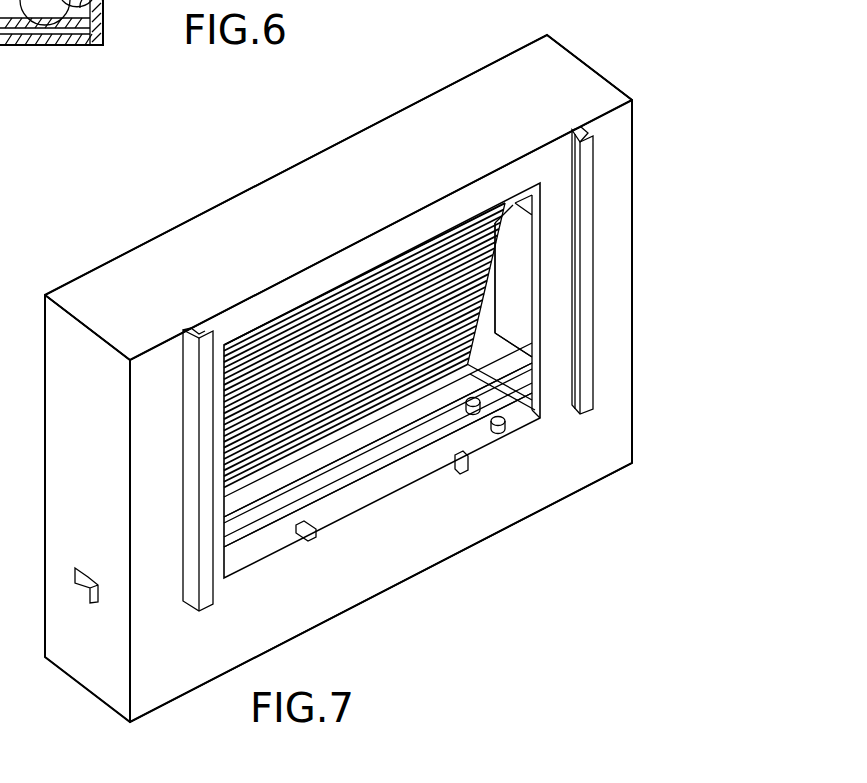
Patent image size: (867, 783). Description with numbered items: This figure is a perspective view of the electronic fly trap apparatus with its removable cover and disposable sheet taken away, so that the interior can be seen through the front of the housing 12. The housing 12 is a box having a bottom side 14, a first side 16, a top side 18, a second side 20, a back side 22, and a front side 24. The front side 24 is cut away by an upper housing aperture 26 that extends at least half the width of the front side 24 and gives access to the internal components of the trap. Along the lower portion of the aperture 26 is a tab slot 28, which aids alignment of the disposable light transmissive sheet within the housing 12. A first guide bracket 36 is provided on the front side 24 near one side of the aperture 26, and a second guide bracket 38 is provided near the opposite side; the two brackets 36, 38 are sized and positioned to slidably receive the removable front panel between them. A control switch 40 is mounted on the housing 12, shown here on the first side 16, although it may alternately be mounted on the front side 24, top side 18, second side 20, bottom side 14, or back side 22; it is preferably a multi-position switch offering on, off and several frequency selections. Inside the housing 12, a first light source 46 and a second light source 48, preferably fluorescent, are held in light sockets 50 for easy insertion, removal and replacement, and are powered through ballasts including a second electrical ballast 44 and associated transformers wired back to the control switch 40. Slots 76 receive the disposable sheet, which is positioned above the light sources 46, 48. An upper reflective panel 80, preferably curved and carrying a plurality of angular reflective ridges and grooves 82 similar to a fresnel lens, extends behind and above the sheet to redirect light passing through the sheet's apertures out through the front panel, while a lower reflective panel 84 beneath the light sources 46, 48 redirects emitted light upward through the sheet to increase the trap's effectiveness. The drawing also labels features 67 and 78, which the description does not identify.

In FIG. 7, the housing 12 is at (632, 383).
In FIG. 6, the bottom side 14 is at (37, 47).
In FIG. 7, the bottom side 14 is at (606, 478).
In FIG. 7, the first side 16 is at (110, 675).
In FIG. 7, the top side 18 is at (420, 126).
In FIG. 7, the second side 20 is at (590, 64).
In FIG. 7, the back side 22 is at (488, 63).
In FIG. 7, the front side 24 is at (612, 128).
In FIG. 7, the upper housing aperture 26 is at (481, 210).
In FIG. 7, the tab slot 28 is at (390, 510).
In FIG. 7, the first guide bracket 36 is at (199, 447).
In FIG. 7, the second guide bracket 38 is at (593, 223).
In FIG. 7, the control switch 40 is at (82, 590).
In FIG. 7, the second electrical ballast 44 is at (512, 290).
In FIG. 7, the first light source 46 is at (300, 520).
In FIG. 7, the second light source 48 is at (268, 508).
In FIG. 7, the light sockets 50 is at (498, 432).
In FIG. 7, the bottom corner edge 67 is at (632, 463).
In FIG. 7, the slots 76 is at (503, 358).
In FIG. 7, the support member 78 is at (376, 410).
In FIG. 7, the upper reflective panel 80 is at (323, 342).
In FIG. 7, the angular reflective ridges and grooves 82 is at (363, 290).
In FIG. 6, the lower reflective panel 84 is at (113, 4).